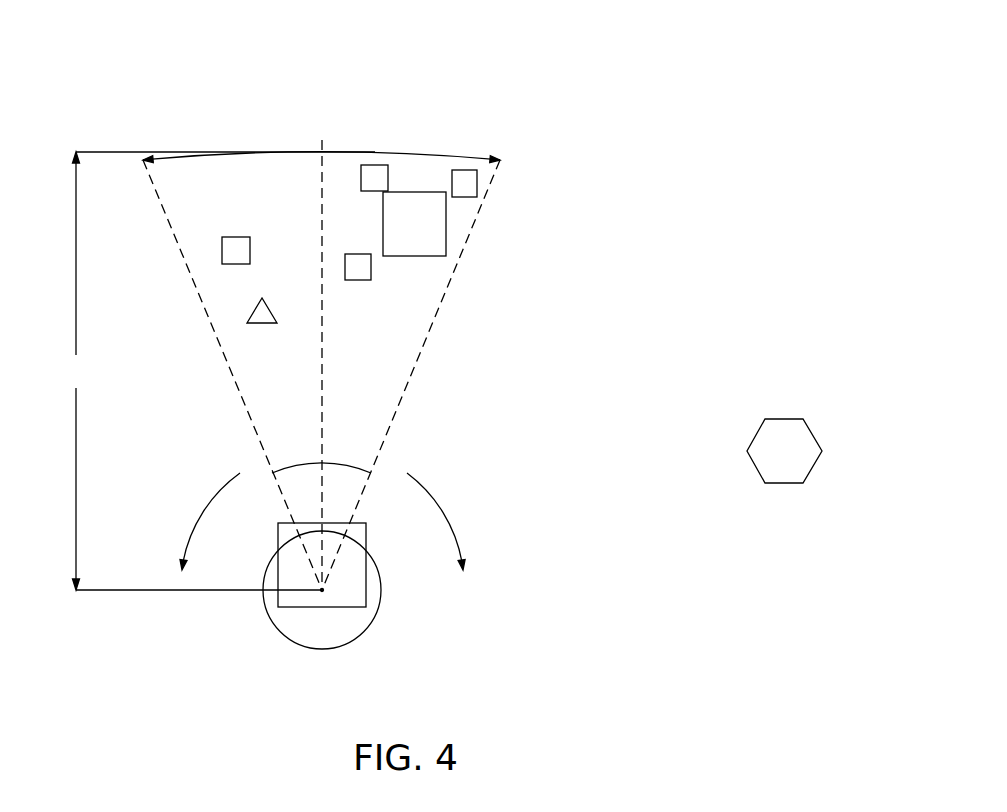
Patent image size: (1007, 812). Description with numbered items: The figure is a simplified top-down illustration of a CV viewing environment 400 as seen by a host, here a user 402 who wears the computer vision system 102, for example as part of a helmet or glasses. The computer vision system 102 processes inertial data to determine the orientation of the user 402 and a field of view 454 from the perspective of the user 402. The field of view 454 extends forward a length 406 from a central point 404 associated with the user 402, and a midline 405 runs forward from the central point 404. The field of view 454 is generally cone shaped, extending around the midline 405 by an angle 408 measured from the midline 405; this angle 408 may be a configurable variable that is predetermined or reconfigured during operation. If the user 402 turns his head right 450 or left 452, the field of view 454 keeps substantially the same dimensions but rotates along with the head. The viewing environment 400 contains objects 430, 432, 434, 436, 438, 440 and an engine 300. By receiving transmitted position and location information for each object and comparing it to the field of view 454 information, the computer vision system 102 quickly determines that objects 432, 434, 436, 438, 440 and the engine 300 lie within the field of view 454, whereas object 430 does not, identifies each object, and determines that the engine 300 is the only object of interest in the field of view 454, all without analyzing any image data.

The CV viewing environment 400 is at (654, 48).
The computer vision system 102 is at (278, 596).
The engine 300 is at (446, 237).
The user 402 is at (372, 632).
The central point 404 is at (322, 592).
The midline 405 is at (321, 190).
The length 406 is at (215, 371).
The angle 408 is at (304, 464).
The object 430 is at (781, 419).
The object 432 is at (463, 170).
The object 434 is at (377, 165).
The object 436 is at (363, 280).
The object 438 is at (267, 323).
The object 440 is at (233, 237).
The right head turn 450 is at (447, 518).
The left head turn 452 is at (197, 520).
The field of view 454 is at (242, 153).